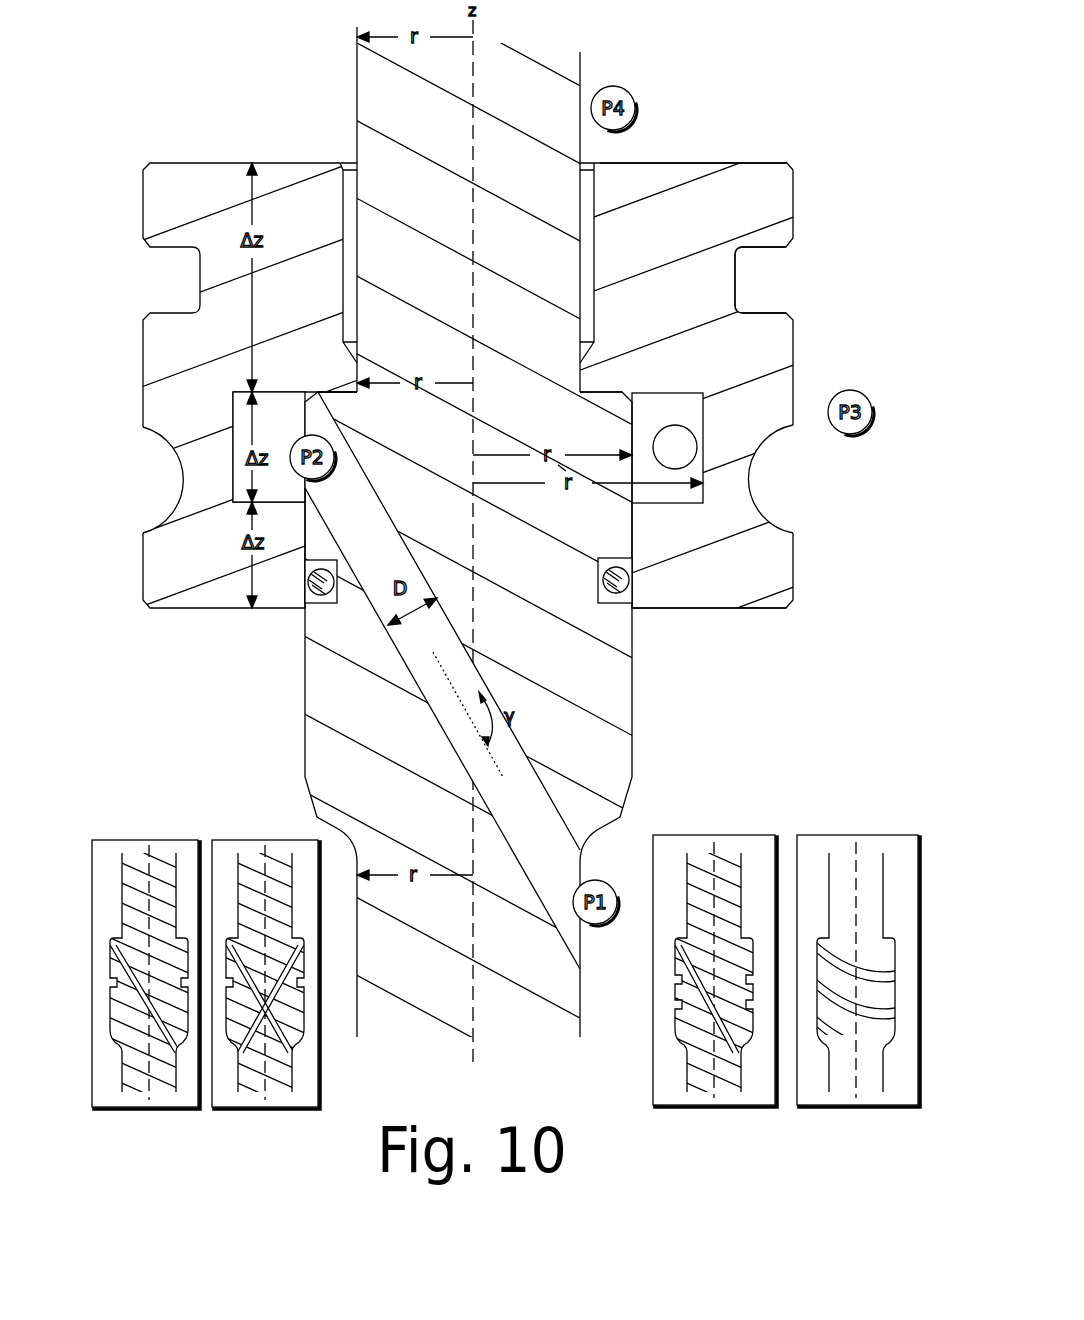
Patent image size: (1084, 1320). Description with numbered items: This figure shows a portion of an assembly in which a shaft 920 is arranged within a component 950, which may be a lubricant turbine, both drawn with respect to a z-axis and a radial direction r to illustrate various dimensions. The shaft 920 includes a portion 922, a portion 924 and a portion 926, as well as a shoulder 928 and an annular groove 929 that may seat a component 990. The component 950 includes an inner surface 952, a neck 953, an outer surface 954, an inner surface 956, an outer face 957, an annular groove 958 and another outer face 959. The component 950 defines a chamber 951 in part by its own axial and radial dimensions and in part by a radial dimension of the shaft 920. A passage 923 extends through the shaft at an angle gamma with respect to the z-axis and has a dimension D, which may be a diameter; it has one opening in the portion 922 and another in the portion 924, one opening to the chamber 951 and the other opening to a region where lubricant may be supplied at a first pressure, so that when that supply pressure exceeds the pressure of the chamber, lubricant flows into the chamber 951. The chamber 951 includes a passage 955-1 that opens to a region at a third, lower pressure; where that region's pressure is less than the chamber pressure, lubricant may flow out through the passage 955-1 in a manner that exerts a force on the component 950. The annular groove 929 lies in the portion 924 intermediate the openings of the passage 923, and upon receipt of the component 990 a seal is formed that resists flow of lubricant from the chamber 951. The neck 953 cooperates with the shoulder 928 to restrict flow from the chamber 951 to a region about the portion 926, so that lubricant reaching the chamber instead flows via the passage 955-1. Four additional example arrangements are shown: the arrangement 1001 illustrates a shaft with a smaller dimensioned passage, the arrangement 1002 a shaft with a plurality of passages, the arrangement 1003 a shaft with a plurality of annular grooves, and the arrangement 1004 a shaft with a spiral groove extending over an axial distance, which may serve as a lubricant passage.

The shaft 920 is at (318, 68).
The portion 922 is at (495, 955).
The passage 923 is at (503, 817).
The portion 924 is at (556, 683).
The portion 926 is at (511, 258).
The shoulder 928 is at (585, 395).
The annular groove 929 is at (625, 560).
The component 950 is at (243, 127).
The chamber 951 is at (260, 437).
The inner surface 952 is at (200, 478).
The neck 953 is at (357, 390).
The outer surface 954 is at (747, 480).
The passage 955-1 is at (700, 438).
The inner surface 956 is at (300, 612).
The outer face 957 is at (713, 608).
The annular groove 958 is at (770, 312).
The outer face 959 is at (697, 163).
The component 990 is at (622, 590).
The arrangement 1001 is at (125, 833).
The arrangement 1002 is at (242, 833).
The arrangement 1003 is at (690, 826).
The arrangement 1004 is at (834, 826).